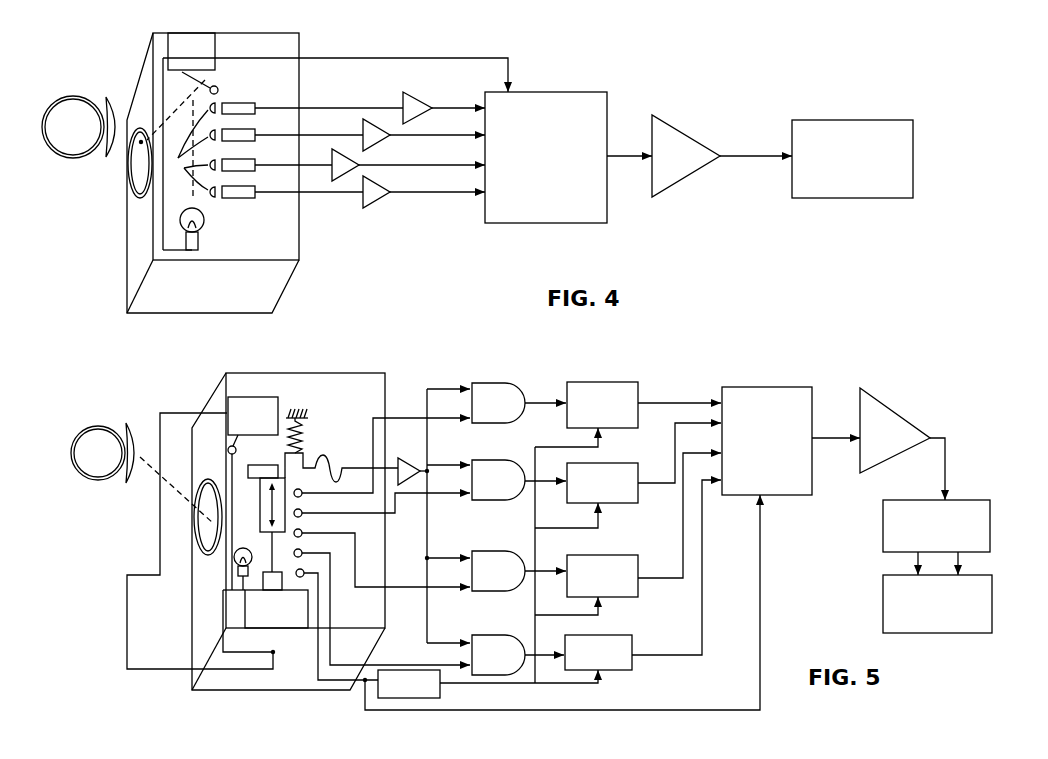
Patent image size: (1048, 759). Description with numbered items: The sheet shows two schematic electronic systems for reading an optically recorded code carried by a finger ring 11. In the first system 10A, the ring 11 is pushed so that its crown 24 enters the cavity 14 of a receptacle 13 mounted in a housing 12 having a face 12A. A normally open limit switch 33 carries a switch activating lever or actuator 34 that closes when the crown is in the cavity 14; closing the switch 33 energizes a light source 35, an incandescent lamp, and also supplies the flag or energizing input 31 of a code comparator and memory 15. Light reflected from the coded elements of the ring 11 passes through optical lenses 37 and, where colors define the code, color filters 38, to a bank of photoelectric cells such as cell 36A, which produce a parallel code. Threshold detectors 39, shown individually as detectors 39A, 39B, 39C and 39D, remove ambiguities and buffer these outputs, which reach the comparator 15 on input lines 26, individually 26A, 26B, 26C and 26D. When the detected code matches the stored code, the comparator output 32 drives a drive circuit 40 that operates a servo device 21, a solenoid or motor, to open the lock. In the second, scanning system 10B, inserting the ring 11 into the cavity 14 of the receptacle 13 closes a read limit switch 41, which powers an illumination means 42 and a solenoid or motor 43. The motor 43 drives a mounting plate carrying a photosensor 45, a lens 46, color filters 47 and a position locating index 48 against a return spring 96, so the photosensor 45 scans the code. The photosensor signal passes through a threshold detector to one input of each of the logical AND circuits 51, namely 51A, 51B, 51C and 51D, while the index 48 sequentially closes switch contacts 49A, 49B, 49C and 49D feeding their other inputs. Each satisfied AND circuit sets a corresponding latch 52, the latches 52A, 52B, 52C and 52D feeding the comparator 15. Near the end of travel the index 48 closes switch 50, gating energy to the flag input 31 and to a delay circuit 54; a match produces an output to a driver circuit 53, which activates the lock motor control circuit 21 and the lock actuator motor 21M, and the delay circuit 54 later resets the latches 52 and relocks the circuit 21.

In FIG. 4, the static optical ring code reading system 10A is at (146, 343).
In FIG. 5, the scanning ring code reading system 10B is at (117, 654).
In FIG. 4, the ring 11 is at (92, 158).
In FIG. 5, the ring 11 is at (92, 485).
In FIG. 4, the housing 12 is at (299, 50).
In FIG. 5, the housing 12 is at (340, 373).
In FIG. 4, the housing face 12A is at (280, 283).
In FIG. 5, the housing face 12A is at (279, 387).
In FIG. 4, the receptacle 13 is at (143, 138).
In FIG. 5, the receptacle 13 is at (203, 488).
In FIG. 4, the cavity 14 is at (130, 178).
In FIG. 5, the cavity 14 is at (212, 540).
In FIG. 4, the code comparator and memory 15 is at (607, 106).
In FIG. 4, the lock motor control circuit 21 is at (913, 160).
In FIG. 5, the lock motor control circuit 21 is at (957, 500).
In FIG. 5, the lock actuator motor 21M is at (985, 593).
In FIG. 4, the key handle 24 is at (110, 162).
In FIG. 5, the key handle 24 is at (130, 484).
In FIG. 4, the input lines 26 is at (313, 108).
In FIG. 4, the sensor output line A 26A is at (479, 112).
In FIG. 4, the sensor output line B 26B is at (481, 138).
In FIG. 4, the sensor output line C 26C is at (481, 168).
In FIG. 4, the sensor output line D 26D is at (482, 196).
In FIG. 4, the flag input 31 is at (510, 85).
In FIG. 5, the flag input 31 is at (752, 502).
In FIG. 4, the comparator output 32 is at (620, 153).
In FIG. 4, the limit switch 33 is at (217, 47).
In FIG. 4, the switch activating lever 34 is at (217, 87).
In FIG. 4, the light source 35 is at (202, 228).
In FIG. 4, the photo sensors 36A is at (255, 189).
In FIG. 4, the optical lenses 37 is at (204, 199).
In FIG. 4, the color filters 38 is at (187, 148).
In FIG. 4, the threshold detectors 39 is at (362, 150).
In FIG. 4, the threshold detector 39A is at (426, 103).
In FIG. 4, the threshold detector 39B is at (381, 131).
In FIG. 4, the threshold detector 39C is at (347, 159).
In FIG. 4, the threshold detector 39D is at (388, 188).
In FIG. 4, the drive circuit 40 is at (688, 178).
In FIG. 5, the read limit switch 41 is at (238, 396).
In FIG. 5, the illumination means 42 is at (252, 560).
In FIG. 5, the motor 43 is at (276, 628).
In FIG. 5, the photosensor 45 is at (236, 452).
In FIG. 5, the lens 46 is at (288, 458).
In FIG. 5, the color filters 47 is at (232, 535).
In FIG. 5, the position locating index 48 is at (305, 456).
In FIG. 5, the switch contact 49A is at (301, 490).
In FIG. 5, the switch contact 49B is at (301, 510).
In FIG. 5, the switch contact 49C is at (301, 530).
In FIG. 5, the switch contact 49D is at (301, 550).
In FIG. 5, the location index switch 50 is at (304, 578).
In FIG. 5, the logical AND circuits 51 is at (489, 373).
In FIG. 5, the AND circuit 51A is at (493, 383).
In FIG. 5, the AND circuit 51B is at (492, 459).
In FIG. 5, the AND circuit 51C is at (490, 550).
In FIG. 5, the AND circuit 51D is at (490, 634).
In FIG. 5, the latch circuits 52 is at (567, 357).
In FIG. 5, the latch circuit 52A is at (607, 382).
In FIG. 5, the latch circuit 52B is at (610, 463).
In FIG. 5, the latch circuit 52C is at (611, 555).
In FIG. 5, the latch circuit 52D is at (620, 635).
In FIG. 5, the driver circuit 53 is at (880, 410).
In FIG. 5, the delay circuit 54 is at (455, 696).
In FIG. 5, the spring 96 is at (297, 420).